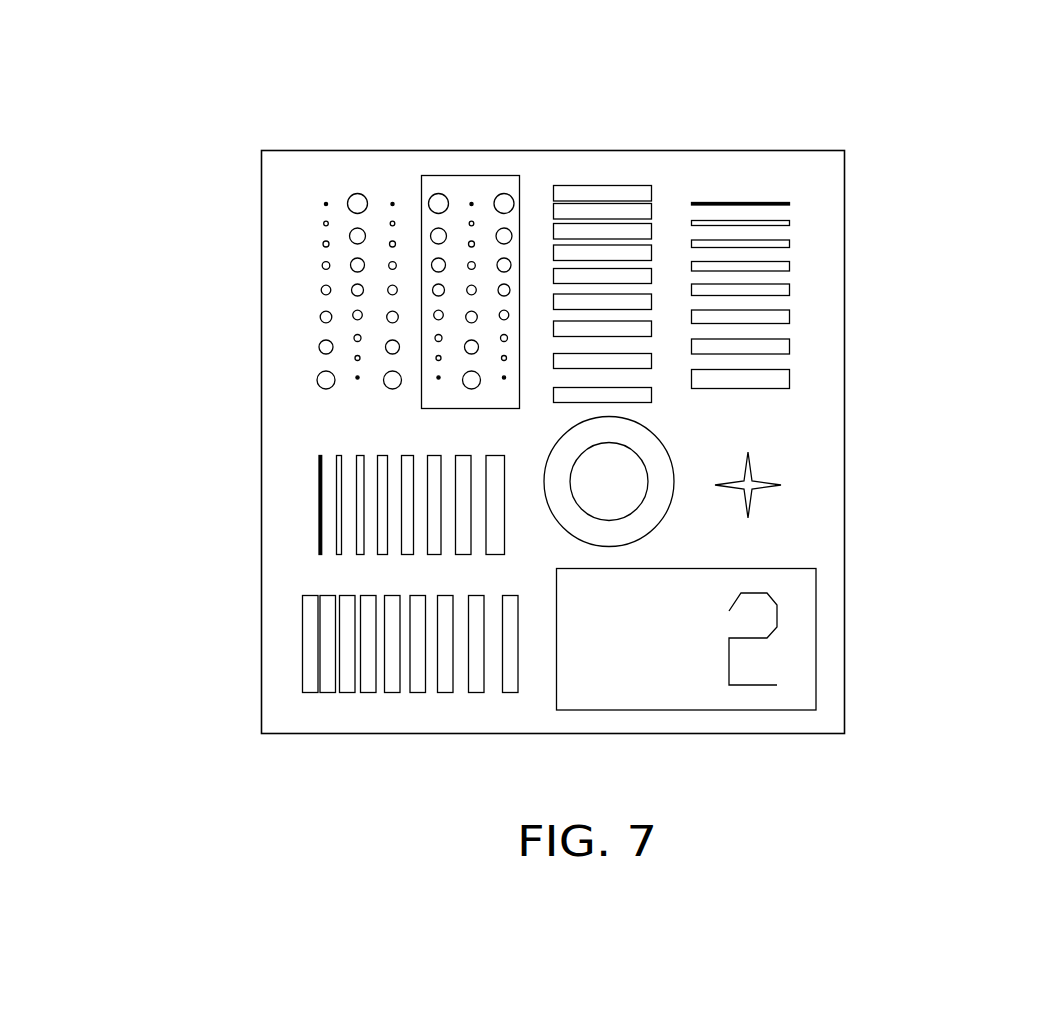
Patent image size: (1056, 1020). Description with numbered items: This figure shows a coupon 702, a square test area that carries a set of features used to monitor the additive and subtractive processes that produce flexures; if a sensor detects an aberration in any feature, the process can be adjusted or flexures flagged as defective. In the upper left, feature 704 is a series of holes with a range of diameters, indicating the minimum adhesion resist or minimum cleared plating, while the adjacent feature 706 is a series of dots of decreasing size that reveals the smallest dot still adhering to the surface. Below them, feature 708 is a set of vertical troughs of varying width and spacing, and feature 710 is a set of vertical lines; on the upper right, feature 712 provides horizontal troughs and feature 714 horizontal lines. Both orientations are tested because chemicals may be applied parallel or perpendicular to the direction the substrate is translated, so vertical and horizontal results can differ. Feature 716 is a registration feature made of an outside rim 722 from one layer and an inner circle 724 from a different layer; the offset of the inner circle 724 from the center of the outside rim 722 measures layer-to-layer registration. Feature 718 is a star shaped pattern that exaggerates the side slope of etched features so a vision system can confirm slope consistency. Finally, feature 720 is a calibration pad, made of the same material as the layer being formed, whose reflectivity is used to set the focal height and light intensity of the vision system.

The coupon 702 is at (158, 92).
The feature 704 is at (318, 216).
The feature 706 is at (451, 278).
The feature 708 is at (324, 503).
The feature 710 is at (303, 645).
The feature 712 is at (758, 199).
The feature 714 is at (590, 156).
The registration feature 716 is at (644, 482).
The star shaped pattern 718 is at (791, 488).
The calibration pad 720 is at (643, 665).
The outside rim 722 is at (627, 551).
The inner circle 724 is at (586, 494).